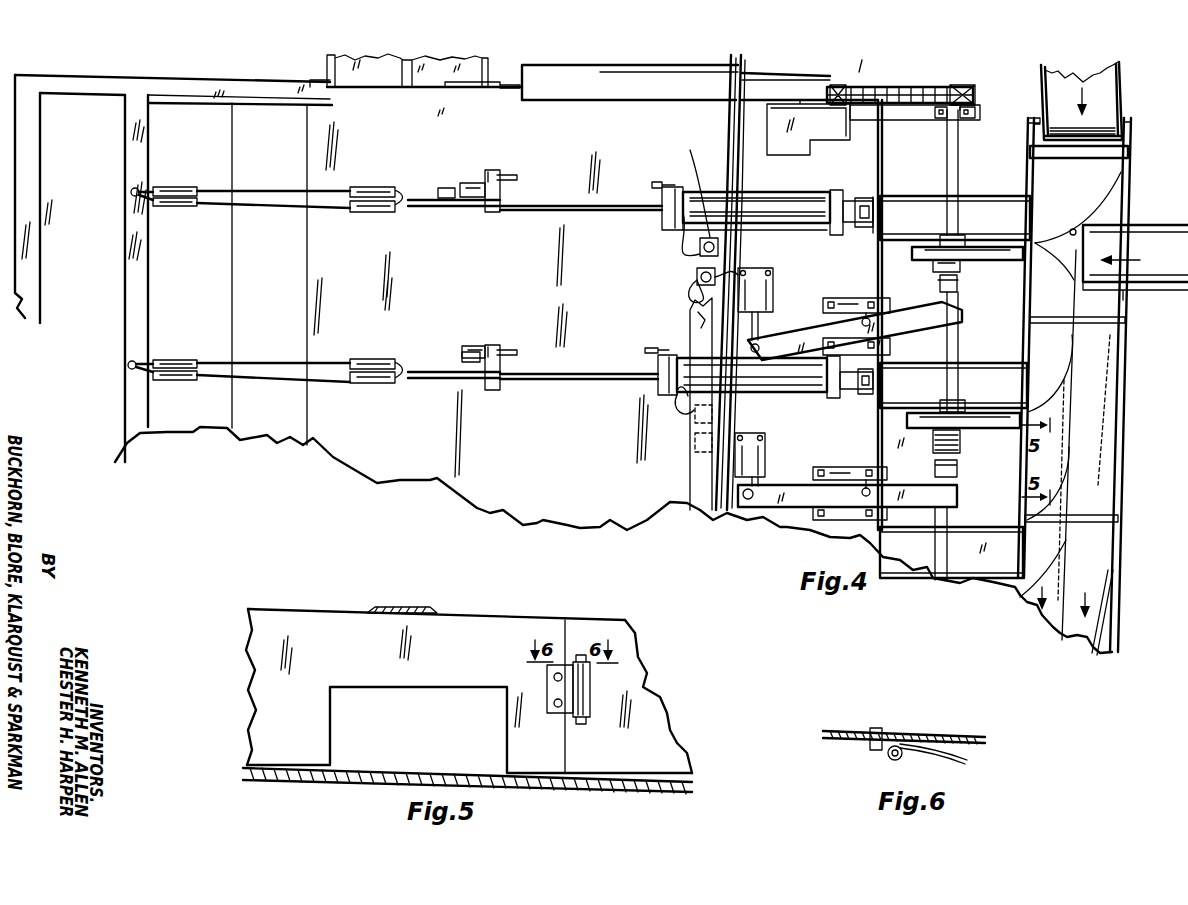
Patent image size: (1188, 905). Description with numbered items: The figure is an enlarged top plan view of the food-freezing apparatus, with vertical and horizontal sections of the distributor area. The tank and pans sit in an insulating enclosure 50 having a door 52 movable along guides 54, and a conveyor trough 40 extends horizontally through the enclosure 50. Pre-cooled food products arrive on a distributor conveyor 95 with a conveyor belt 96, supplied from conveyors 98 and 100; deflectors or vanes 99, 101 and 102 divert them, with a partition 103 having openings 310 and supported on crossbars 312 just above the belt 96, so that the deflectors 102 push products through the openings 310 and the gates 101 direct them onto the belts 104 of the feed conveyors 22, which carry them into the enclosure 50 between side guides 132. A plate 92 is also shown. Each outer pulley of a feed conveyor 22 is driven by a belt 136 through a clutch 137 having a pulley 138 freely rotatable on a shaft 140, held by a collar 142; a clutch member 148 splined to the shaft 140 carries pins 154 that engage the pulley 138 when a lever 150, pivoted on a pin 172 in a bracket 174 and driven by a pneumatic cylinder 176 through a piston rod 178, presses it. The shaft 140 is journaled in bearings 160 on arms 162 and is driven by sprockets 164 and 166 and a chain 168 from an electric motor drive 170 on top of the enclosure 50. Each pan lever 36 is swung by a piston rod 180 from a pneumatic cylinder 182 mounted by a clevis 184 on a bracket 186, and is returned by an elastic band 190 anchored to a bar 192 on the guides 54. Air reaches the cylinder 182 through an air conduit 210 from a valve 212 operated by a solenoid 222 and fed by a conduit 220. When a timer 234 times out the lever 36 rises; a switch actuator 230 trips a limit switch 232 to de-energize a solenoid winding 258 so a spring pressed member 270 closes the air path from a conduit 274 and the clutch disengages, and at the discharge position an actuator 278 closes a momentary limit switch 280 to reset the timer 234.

In FIG. 4, the feed conveyor 22 is at (931, 192).
In FIG. 4, the lever 36 is at (436, 208).
In FIG. 4, the conveyor trough 40 is at (322, 62).
In FIG. 4, the insulating enclosure 50 is at (444, 112).
In FIG. 4, the door 52 is at (613, 378).
In FIG. 4, the guides 54 is at (122, 80).
In FIG. 4, the plate 92 is at (497, 90).
In FIG. 4, the distributor conveyor 95 is at (1133, 414).
In FIG. 4, the conveyor belt 96 is at (1105, 350).
In FIG. 5, the conveyor belt 96 is at (645, 788).
In FIG. 4, the conveyor 98 is at (1115, 114).
In FIG. 4, the deflector 99 is at (1094, 195).
In FIG. 4, the conveyor 100 is at (1150, 243).
In FIG. 4, the gates 101 is at (1047, 292).
In FIG. 5, the gates 101 is at (637, 706).
In FIG. 6, the gates 101 is at (968, 757).
In FIG. 4, the deflectors 102 is at (1105, 425).
In FIG. 4, the partition 103 is at (1067, 570).
In FIG. 5, the partition 103 is at (509, 630).
In FIG. 6, the partition 103 is at (848, 733).
In FIG. 4, the belts 104 is at (1000, 205).
In FIG. 4, the side guides 132 is at (883, 192).
In FIG. 4, the belt 136 is at (995, 256).
In FIG. 4, the clutch 137 is at (933, 289).
In FIG. 4, the pulley 138 is at (925, 259).
In FIG. 4, the shaft 140 is at (956, 165).
In FIG. 4, the collar 142 is at (958, 240).
In FIG. 4, the clutch member 148 is at (960, 288).
In FIG. 4, the lever 150 is at (913, 320).
In FIG. 4, the pins 154 is at (961, 445).
In FIG. 4, the bearings 160 is at (962, 126).
In FIG. 4, the arms 162 is at (920, 117).
In FIG. 4, the sprocket 164 is at (845, 90).
In FIG. 4, the sprocket 166 is at (964, 86).
In FIG. 4, the chain 168 is at (906, 88).
In FIG. 4, the electric motor drive 170 is at (832, 142).
In FIG. 4, the pin 172 is at (866, 305).
In FIG. 4, the bracket 174 is at (824, 300).
In FIG. 4, the pneumatic cylinder 176 is at (786, 265).
In FIG. 4, the piston rod 178 is at (760, 322).
In FIG. 4, the piston rod 180 is at (601, 212).
In FIG. 4, the pneumatic cylinder 182 is at (695, 200).
In FIG. 4, the clevis 184 is at (848, 199).
In FIG. 4, the bracket 186 is at (866, 206).
In FIG. 4, the elastic band 190 is at (280, 188).
In FIG. 4, the bar 192 is at (140, 250).
In FIG. 4, the air conduit 210 is at (700, 251).
In FIG. 4, the valve 212 is at (697, 274).
In FIG. 4, the conduit 220 is at (742, 70).
In FIG. 4, the solenoid 222 is at (698, 246).
In FIG. 4, the switch actuator 230 is at (445, 190).
In FIG. 4, the limit switch 232 is at (471, 172).
In FIG. 4, the timer 234 is at (643, 70).
In FIG. 4, the solenoid winding 258 is at (695, 283).
In FIG. 4, the spring pressed member 270 is at (697, 301).
In FIG. 4, the conduit 274 is at (704, 316).
In FIG. 4, the actuator 278 is at (496, 176).
In FIG. 4, the momentary limit switch 280 is at (661, 183).
In FIG. 5, the openings 310 is at (490, 690).
In FIG. 4, the crossbars 312 is at (1110, 321).
In FIG. 5, the crossbars 312 is at (398, 605).